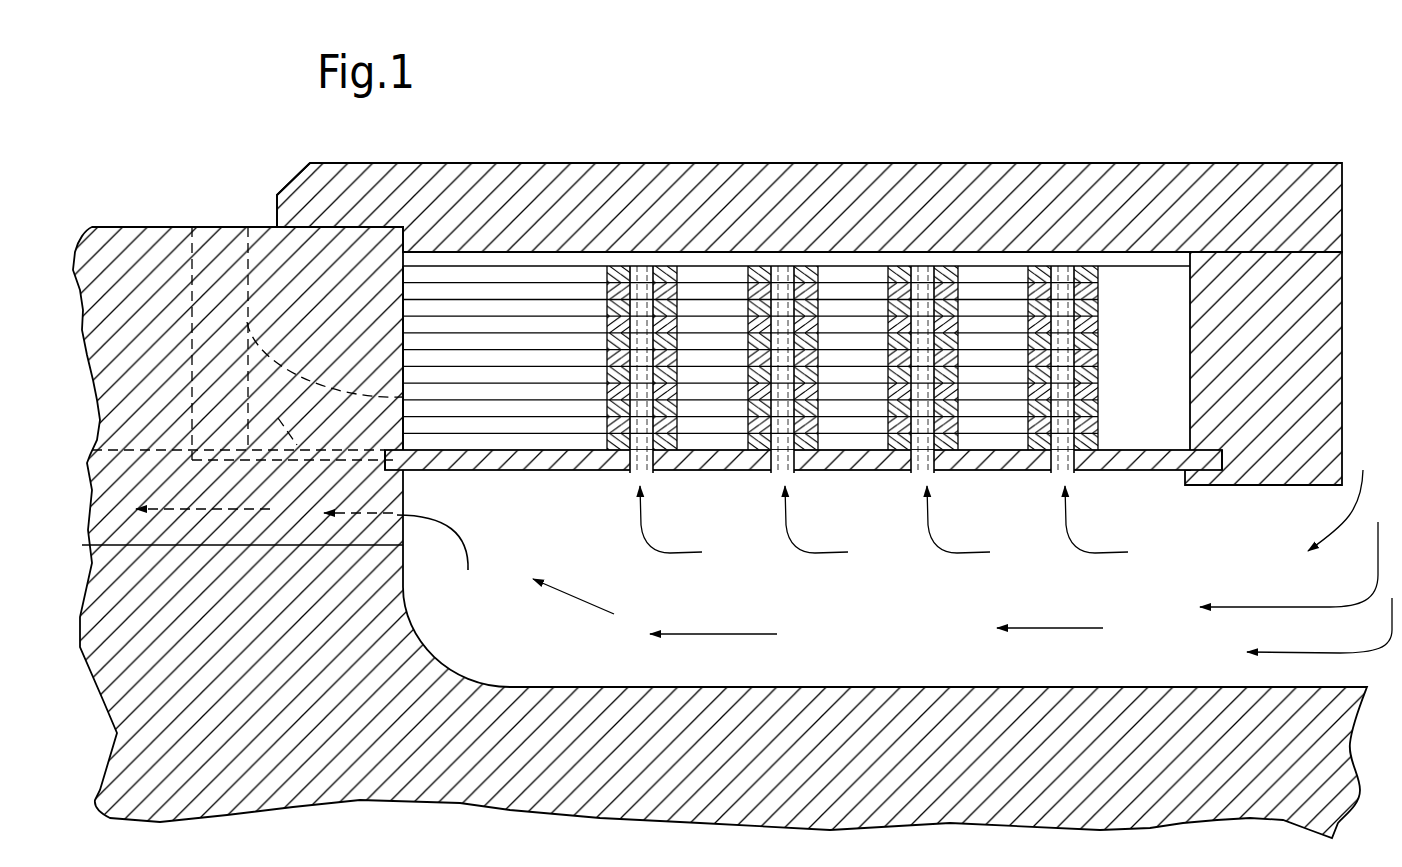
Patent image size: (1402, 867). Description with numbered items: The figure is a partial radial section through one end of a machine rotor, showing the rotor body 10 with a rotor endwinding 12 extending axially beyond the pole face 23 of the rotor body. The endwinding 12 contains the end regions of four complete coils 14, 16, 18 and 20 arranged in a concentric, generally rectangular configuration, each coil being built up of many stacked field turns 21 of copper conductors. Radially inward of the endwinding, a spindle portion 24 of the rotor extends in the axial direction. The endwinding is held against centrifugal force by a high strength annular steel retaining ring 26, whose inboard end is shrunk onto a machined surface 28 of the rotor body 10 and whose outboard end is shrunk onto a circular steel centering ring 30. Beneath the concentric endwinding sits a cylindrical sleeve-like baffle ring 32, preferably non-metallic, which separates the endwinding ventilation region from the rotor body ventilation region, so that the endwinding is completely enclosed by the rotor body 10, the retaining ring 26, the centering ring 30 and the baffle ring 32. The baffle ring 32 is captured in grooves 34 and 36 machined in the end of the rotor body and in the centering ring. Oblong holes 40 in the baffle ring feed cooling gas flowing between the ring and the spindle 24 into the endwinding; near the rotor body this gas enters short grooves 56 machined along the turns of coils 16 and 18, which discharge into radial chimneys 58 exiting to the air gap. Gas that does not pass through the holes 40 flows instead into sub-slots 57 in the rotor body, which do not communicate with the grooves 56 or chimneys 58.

The rotor body 10 is at (252, 168).
The rotor endwinding 12 is at (907, 160).
The coil 14 is at (602, 422).
The coil 16 is at (745, 426).
The coil 18 is at (885, 421).
The coil 20 is at (1022, 417).
The field turns 21 is at (613, 323).
The pole face 23 is at (405, 408).
The spindle portion 24 is at (790, 687).
The retaining ring 26 is at (1203, 190).
The machined surface 28 is at (343, 232).
The centering ring 30 is at (1318, 328).
The baffle ring 32 is at (1135, 483).
The groove 34 is at (398, 470).
The groove 36 is at (1187, 472).
The oblong holes 40 is at (636, 470).
The short grooves 56 is at (266, 402).
The sub-slot 57 is at (415, 545).
The radial chimneys 58 is at (250, 322).